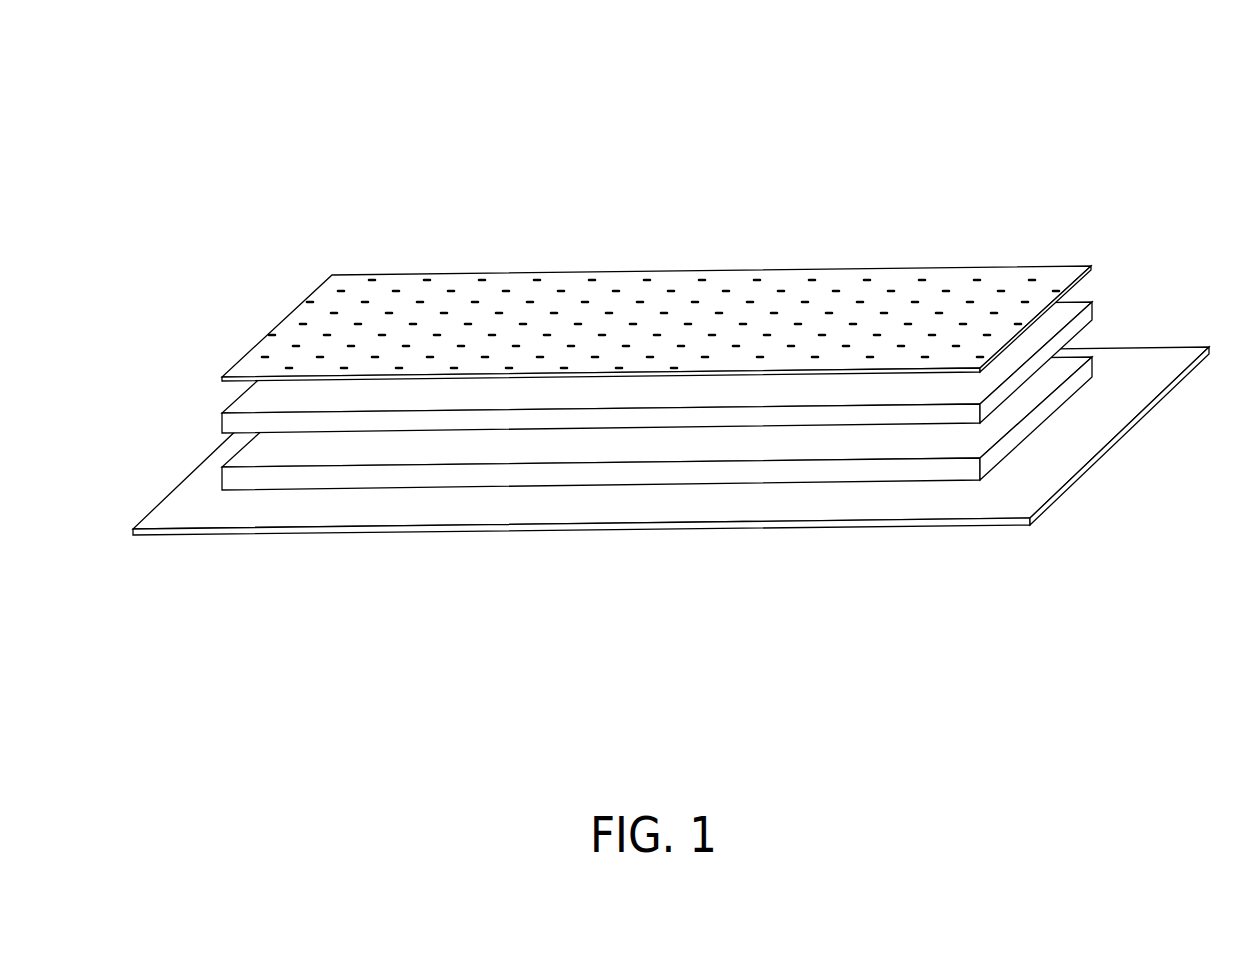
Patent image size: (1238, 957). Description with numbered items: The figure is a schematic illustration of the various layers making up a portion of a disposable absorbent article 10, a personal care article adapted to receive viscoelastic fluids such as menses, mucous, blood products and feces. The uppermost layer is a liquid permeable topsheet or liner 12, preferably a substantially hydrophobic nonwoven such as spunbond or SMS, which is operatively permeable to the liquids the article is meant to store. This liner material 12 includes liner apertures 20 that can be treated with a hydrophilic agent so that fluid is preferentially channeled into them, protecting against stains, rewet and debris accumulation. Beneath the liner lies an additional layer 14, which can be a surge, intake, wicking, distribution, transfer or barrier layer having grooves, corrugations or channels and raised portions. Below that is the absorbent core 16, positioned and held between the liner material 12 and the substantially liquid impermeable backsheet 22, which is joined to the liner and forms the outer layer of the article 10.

The disposable absorbent article 10 is at (377, 147).
The liquid permeable topsheet or liner 12 is at (258, 349).
The additional layer 14 is at (247, 402).
The absorbent core 16 is at (248, 457).
The liner apertures 20 is at (555, 290).
The backsheet 22 is at (666, 514).